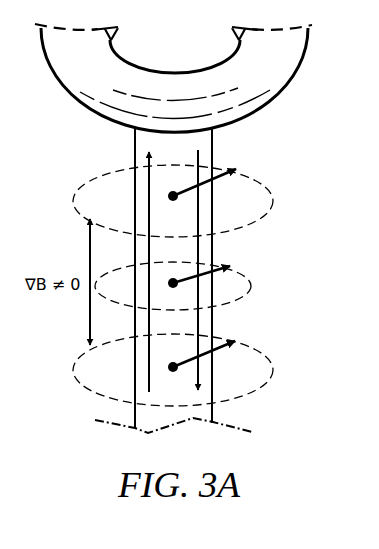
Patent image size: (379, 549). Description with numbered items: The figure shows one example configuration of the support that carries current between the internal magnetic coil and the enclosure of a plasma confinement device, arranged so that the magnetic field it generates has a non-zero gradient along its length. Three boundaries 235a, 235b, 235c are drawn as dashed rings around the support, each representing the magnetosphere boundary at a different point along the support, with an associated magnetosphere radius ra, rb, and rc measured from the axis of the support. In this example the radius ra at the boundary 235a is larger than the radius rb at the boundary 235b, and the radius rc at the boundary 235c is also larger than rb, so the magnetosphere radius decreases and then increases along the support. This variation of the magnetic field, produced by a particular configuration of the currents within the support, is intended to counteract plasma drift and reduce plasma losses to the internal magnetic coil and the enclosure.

The boundary 235a is at (242, 172).
The boundary 235b is at (233, 265).
The boundary 235c is at (238, 341).